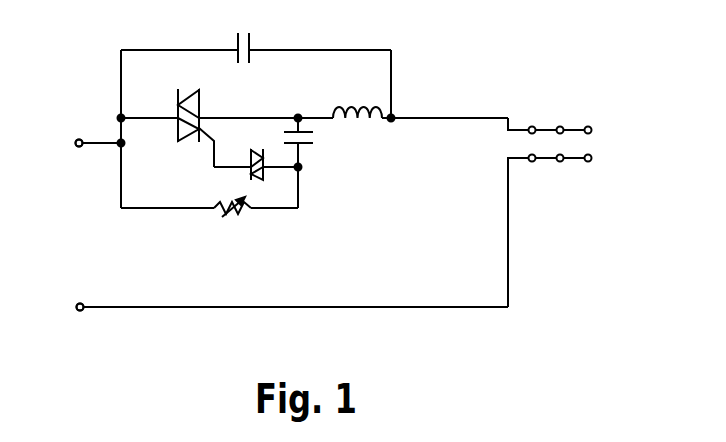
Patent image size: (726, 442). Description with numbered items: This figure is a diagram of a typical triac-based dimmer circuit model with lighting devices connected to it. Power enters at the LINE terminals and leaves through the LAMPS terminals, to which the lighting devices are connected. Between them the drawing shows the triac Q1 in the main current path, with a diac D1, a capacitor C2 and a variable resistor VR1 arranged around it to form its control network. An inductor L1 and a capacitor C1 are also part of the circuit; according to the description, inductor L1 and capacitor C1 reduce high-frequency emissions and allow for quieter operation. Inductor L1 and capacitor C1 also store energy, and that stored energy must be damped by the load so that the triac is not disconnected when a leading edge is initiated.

The capacitor C1 is at (239, 36).
The triac Q1 is at (182, 132).
The diac D1 is at (260, 152).
The capacitor C2 is at (307, 154).
The inductor L1 is at (357, 126).
The variable resistor VR1 is at (238, 223).
The line terminals LINE is at (64, 225).
The lamp terminals LAMPS is at (566, 127).